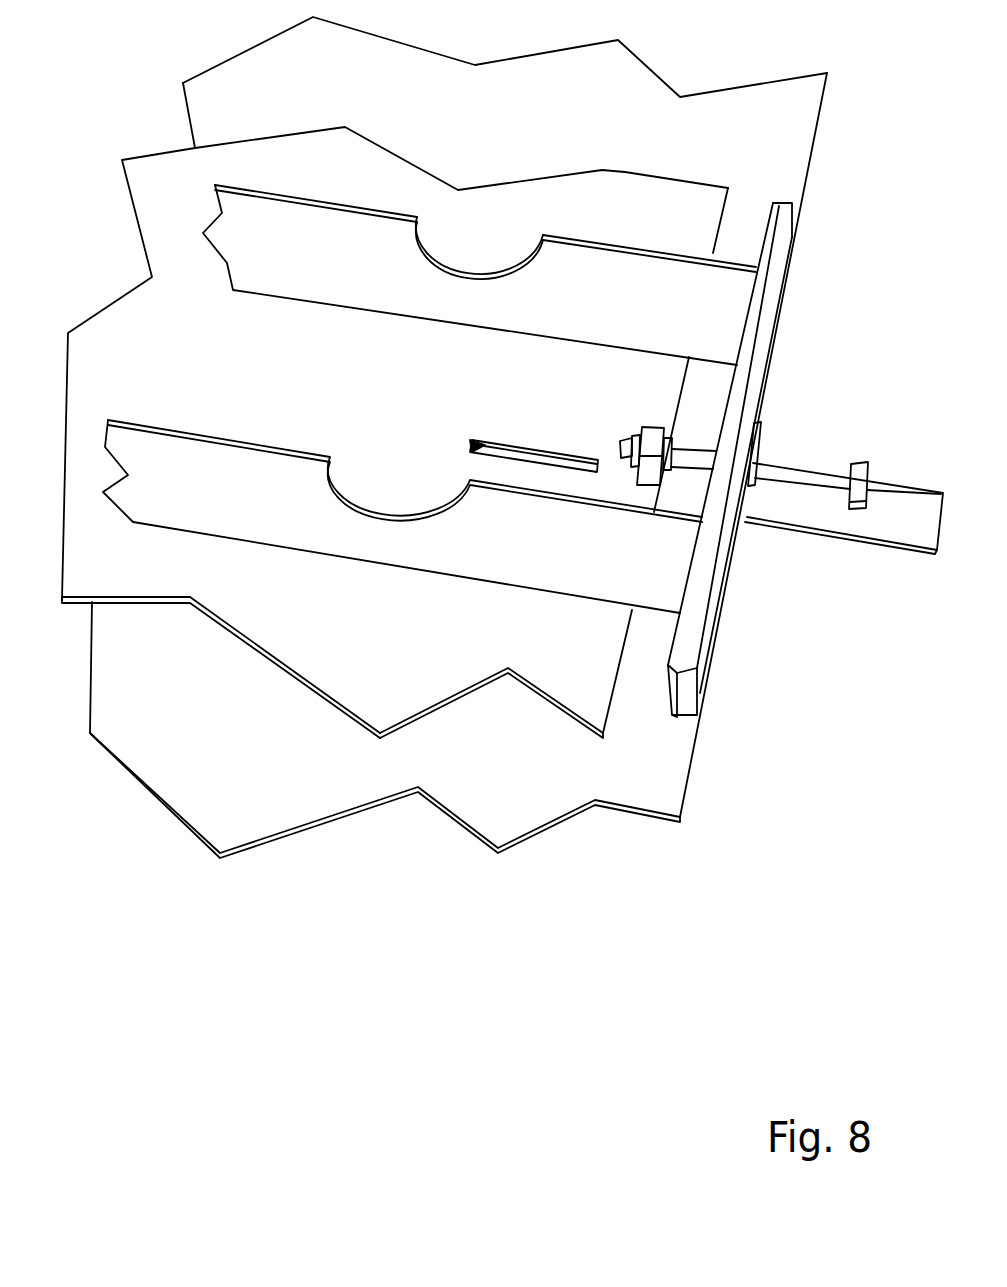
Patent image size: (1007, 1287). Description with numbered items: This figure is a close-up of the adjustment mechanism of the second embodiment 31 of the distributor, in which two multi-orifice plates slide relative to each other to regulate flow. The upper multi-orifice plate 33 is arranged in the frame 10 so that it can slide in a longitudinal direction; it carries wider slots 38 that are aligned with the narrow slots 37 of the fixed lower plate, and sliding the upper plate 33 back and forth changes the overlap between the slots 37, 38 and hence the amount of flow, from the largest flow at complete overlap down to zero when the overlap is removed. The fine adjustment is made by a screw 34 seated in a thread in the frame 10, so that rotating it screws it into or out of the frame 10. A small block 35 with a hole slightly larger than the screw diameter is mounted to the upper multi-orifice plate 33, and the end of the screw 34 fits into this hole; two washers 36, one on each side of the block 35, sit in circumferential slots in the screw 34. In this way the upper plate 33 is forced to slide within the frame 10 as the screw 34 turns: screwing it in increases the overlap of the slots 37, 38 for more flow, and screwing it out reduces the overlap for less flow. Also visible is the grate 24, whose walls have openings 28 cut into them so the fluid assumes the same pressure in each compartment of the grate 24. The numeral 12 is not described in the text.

The frame 10 is at (793, 238).
The back plate 12 is at (648, 115).
The grate 24 is at (315, 200).
The openings 28 is at (487, 258).
The second embodiment of distributor 31 is at (125, 60).
The upper multi-orifice plate 33 is at (288, 652).
The screw 34 is at (856, 468).
The small block 35 is at (657, 427).
The washers 36 is at (633, 440).
The narrow slots 37 is at (470, 440).
The wider slots 38 is at (573, 457).